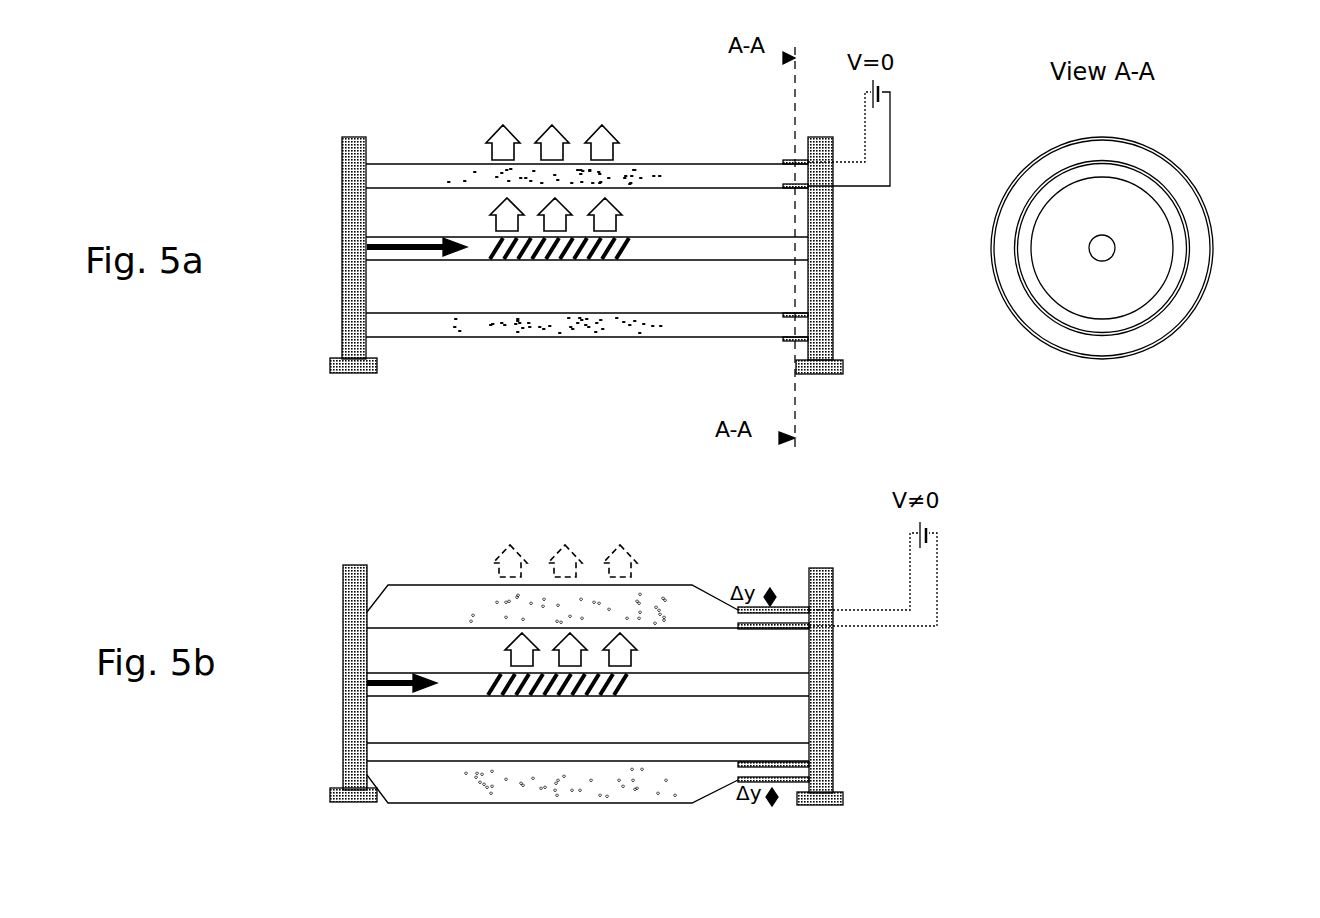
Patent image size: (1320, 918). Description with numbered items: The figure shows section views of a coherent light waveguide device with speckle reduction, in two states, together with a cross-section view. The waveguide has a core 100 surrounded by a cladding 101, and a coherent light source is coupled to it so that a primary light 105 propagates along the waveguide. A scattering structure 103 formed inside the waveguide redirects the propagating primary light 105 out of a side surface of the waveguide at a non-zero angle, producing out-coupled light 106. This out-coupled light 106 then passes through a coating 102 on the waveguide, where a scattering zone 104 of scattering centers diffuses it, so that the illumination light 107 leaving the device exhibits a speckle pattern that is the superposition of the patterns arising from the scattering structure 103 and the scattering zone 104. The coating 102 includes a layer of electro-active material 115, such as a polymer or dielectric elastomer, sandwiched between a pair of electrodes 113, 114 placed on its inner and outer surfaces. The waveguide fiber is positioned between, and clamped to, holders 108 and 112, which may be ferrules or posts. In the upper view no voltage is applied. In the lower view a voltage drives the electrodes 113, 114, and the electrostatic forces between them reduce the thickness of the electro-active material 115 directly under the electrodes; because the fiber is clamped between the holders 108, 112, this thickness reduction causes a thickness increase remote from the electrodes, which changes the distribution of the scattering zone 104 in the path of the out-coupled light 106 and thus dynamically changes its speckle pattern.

The core 100 is at (370, 250).
The cladding 101 is at (373, 282).
The coating 102 is at (380, 180).
The scattering structure 103 is at (490, 260).
The scattering zone 104 is at (640, 178).
The primary light 105 is at (370, 247).
The out-coupled light 106 is at (495, 213).
The illumination light 107 is at (603, 145).
The holder 108 is at (353, 348).
The holder 112 is at (827, 368).
The electrode 113 is at (1022, 288).
The electrode 114 is at (1022, 333).
The electro-active material 115 is at (1030, 313).